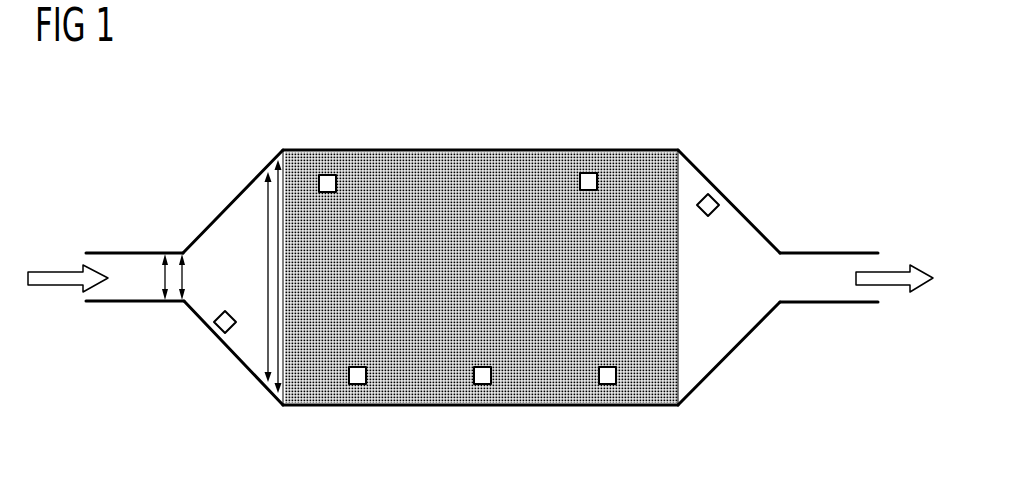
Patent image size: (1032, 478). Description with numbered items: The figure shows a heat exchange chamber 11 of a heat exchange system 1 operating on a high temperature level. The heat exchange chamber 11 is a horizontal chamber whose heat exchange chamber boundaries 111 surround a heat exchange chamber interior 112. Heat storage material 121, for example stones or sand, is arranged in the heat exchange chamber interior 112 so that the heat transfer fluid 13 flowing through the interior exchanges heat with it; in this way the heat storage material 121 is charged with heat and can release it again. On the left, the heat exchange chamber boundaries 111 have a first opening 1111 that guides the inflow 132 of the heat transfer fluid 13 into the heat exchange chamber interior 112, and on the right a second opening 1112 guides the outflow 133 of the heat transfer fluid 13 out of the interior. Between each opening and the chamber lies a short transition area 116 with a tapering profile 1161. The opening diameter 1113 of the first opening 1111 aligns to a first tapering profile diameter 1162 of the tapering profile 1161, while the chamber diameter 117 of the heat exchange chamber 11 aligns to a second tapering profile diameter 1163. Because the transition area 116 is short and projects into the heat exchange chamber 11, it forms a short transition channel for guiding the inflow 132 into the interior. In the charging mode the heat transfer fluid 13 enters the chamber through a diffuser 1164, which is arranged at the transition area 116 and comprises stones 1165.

The heat exchange system 1 is at (850, 67).
The heat exchange chamber 11 is at (688, 134).
The heat exchange chamber boundaries 111 is at (670, 410).
The heat exchange chamber interior 112 is at (255, 357).
The first opening 1111 is at (115, 293).
The second opening 1112 is at (827, 292).
The opening diameter 1113 is at (163, 280).
The transition area 116 is at (257, 192).
The tapering profile 1161 is at (233, 201).
The first tapering profile diameter 1162 is at (185, 279).
The second tapering profile diameter 1163 is at (267, 213).
The diffuser 1164 is at (253, 350).
The stones 1165 is at (326, 174).
The chamber diameter 117 is at (277, 305).
The heat storage material 121 is at (543, 390).
The heat transfer fluid 13 is at (120, 264).
The inflow 132 is at (45, 279).
The outflow 133 is at (897, 273).